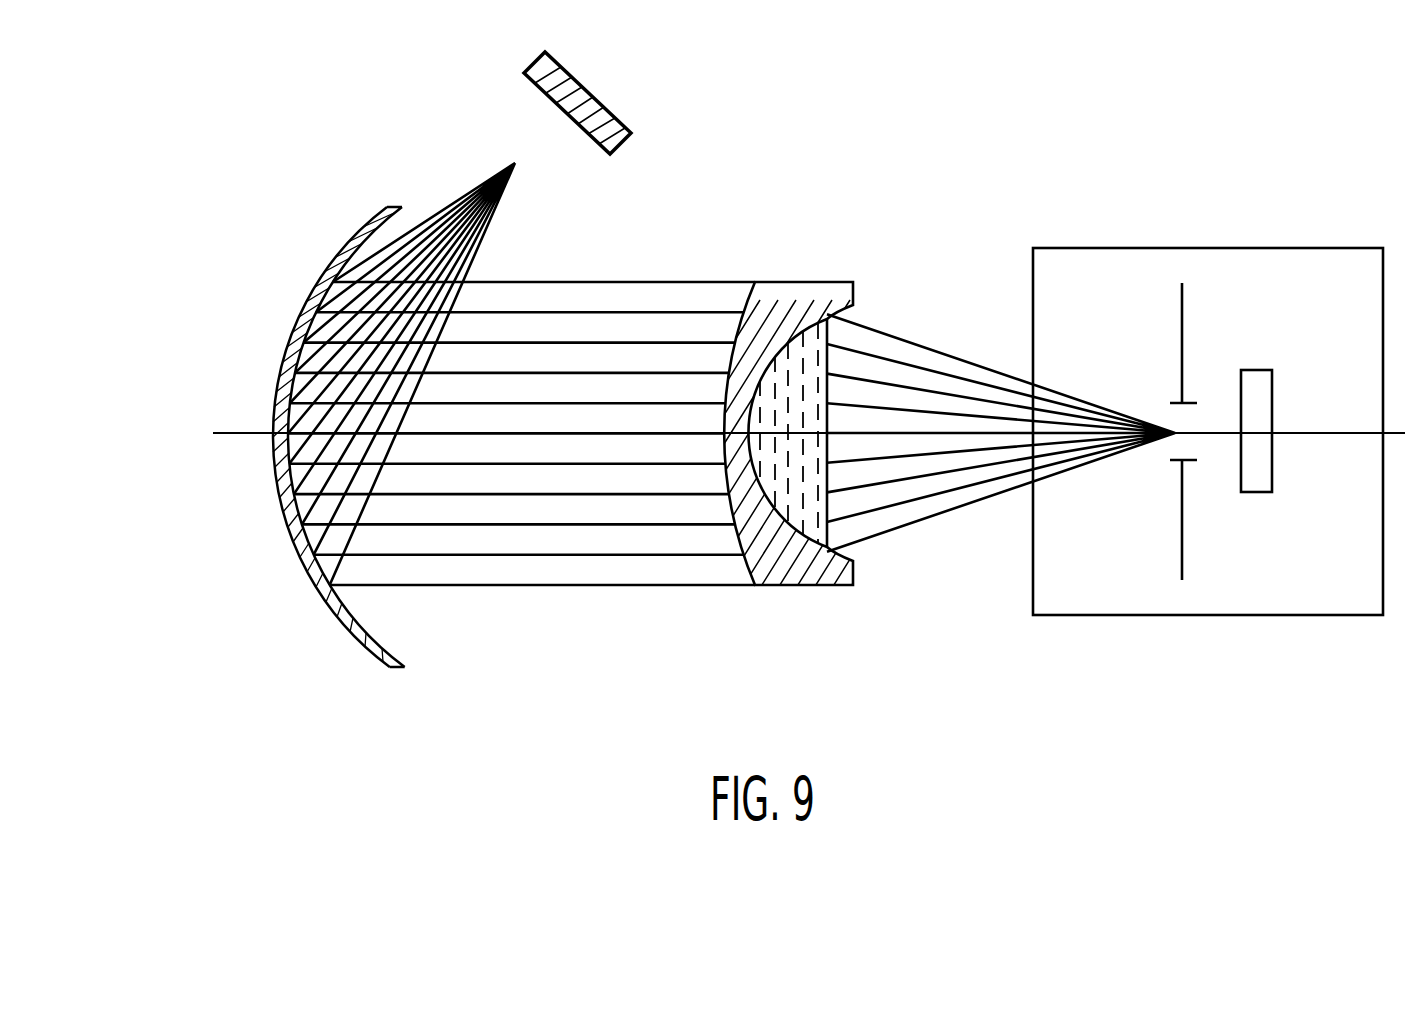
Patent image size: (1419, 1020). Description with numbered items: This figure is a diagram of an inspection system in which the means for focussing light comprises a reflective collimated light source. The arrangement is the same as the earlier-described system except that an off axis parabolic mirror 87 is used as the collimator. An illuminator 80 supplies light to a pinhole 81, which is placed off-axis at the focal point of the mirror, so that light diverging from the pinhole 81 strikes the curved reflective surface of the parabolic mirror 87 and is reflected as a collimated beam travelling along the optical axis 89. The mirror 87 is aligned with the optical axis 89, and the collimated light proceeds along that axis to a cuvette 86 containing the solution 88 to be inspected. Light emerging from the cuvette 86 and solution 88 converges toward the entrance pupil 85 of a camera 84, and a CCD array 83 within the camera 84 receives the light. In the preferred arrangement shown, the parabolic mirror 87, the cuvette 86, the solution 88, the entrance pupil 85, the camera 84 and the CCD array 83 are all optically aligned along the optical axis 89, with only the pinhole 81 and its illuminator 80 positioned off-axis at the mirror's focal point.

The illuminator 80 is at (613, 148).
The pinhole 81 is at (515, 162).
The CCD array 83 is at (1257, 368).
The camera 84 is at (1152, 615).
The entrance pupil 85 is at (1184, 400).
The cuvette 86 is at (803, 577).
The off axis parabolic mirror 87 is at (367, 218).
The solution 88 is at (809, 343).
The optical axis 89 is at (525, 433).